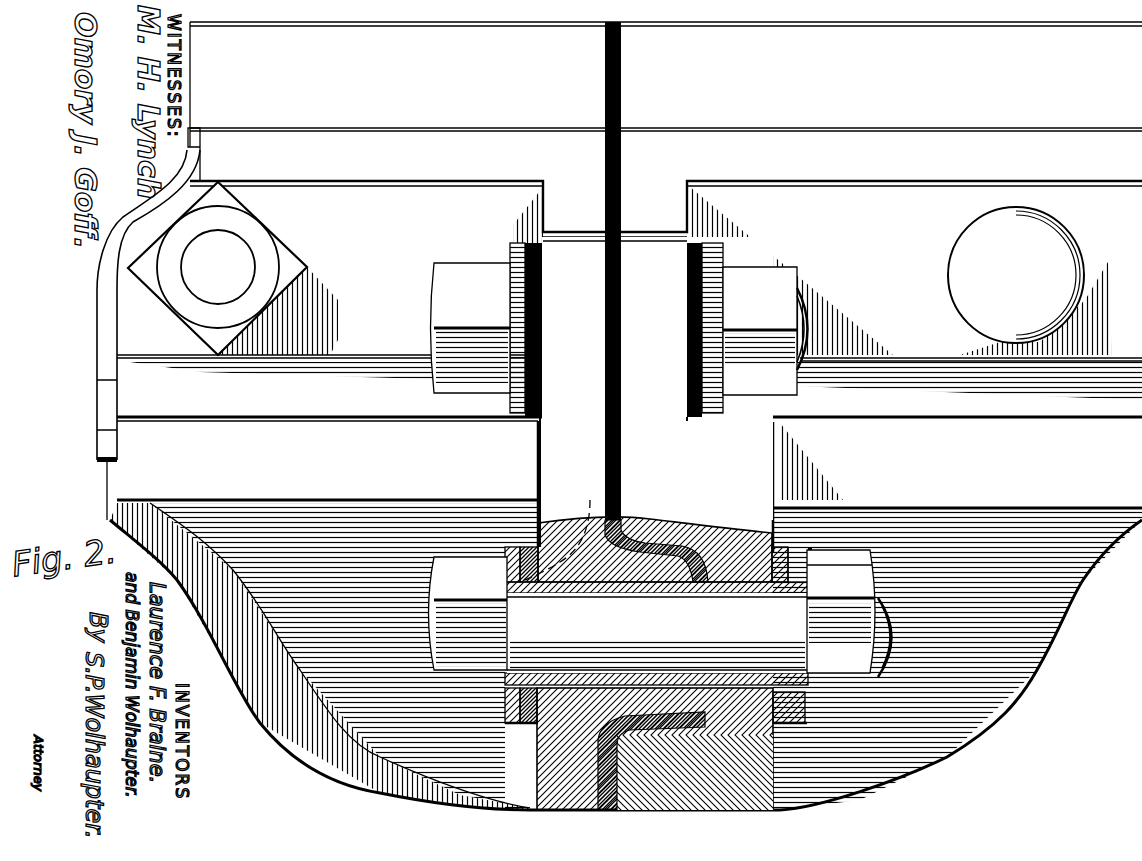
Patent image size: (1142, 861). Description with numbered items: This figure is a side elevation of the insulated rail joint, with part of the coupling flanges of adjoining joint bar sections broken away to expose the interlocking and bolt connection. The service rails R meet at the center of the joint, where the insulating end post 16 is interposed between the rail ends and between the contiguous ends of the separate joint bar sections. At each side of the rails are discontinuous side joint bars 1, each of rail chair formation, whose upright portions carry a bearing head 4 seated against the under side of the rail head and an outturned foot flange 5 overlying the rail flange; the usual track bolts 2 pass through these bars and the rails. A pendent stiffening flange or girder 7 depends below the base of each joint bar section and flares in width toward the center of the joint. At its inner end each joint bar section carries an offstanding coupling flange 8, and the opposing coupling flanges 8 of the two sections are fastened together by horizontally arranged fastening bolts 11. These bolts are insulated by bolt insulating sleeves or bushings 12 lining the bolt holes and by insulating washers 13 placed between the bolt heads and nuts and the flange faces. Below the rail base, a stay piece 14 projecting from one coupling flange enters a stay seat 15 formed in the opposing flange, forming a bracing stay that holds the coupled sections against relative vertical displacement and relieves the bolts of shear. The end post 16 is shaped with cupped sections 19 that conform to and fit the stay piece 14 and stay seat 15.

The service rails R is at (666, 84).
The insulating end post 16 is at (604, 85).
The bearing head 4 is at (665, 182).
The side joint bars 1 is at (619, 335).
The track bolts 2 is at (606, 268).
The foot flange 5 is at (629, 391).
The pendent stiffening flange or girder 7 is at (258, 726).
The coupling flange 8 is at (649, 389).
The fastening bolts 11 is at (440, 318).
The bolt insulating sleeves or bushings 12 is at (584, 586).
The insulating washers 13 is at (533, 580).
The stay piece 14 is at (656, 570).
The stay seat 15 is at (707, 710).
The cupped sections 19 is at (590, 520).